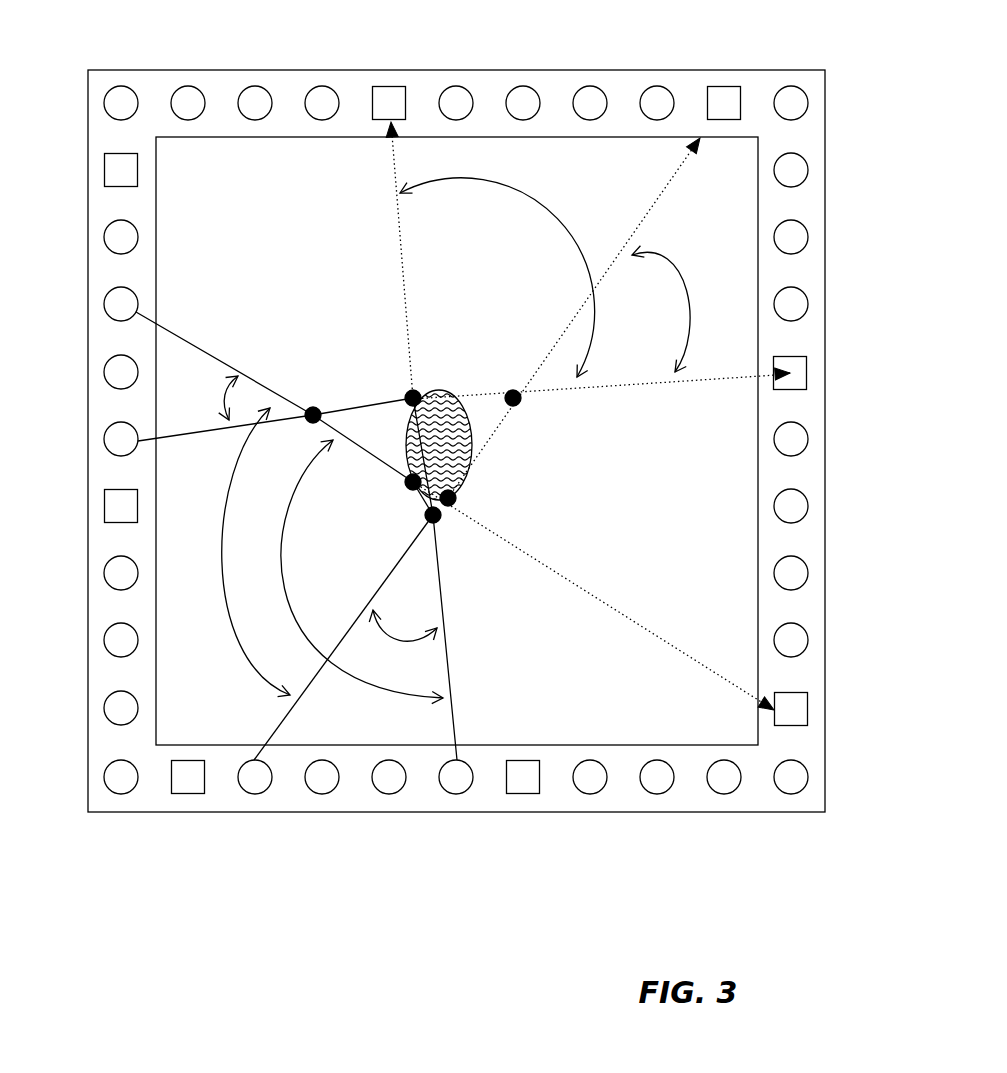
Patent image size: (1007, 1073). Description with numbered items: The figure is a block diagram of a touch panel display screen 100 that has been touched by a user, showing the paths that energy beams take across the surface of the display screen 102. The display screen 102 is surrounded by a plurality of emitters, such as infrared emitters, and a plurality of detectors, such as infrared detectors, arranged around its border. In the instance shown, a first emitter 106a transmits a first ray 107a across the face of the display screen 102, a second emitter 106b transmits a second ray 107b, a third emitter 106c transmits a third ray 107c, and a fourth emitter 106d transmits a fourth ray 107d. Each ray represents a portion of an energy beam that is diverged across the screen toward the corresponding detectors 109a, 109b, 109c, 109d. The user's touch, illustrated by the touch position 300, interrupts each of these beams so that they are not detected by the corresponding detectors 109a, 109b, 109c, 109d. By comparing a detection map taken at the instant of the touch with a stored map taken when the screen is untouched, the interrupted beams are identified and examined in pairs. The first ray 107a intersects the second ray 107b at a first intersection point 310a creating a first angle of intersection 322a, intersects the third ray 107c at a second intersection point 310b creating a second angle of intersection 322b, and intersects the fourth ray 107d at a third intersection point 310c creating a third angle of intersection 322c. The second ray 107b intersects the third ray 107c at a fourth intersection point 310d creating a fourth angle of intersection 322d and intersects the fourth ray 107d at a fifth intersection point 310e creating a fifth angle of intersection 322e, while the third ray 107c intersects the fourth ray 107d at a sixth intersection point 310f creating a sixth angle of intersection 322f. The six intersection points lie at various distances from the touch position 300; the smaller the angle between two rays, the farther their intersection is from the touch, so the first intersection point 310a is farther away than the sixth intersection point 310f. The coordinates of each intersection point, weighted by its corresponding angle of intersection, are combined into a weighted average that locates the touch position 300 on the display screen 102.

The touch panel display screen 100 is at (573, 815).
The display screen 102 is at (521, 722).
The first emitter 106a is at (110, 295).
The second emitter 106b is at (107, 430).
The third emitter 106c is at (262, 798).
The fourth emitter 106d is at (462, 798).
The first ray 107a is at (205, 345).
The second ray 107b is at (620, 393).
The third ray 107c is at (638, 203).
The fourth ray 107d is at (590, 592).
The first detector 109a is at (389, 85).
The second detector 109b is at (724, 86).
The third detector 109c is at (807, 378).
The fourth detector 109d is at (808, 715).
The touch position 300 is at (478, 452).
The first intersection point 310a is at (320, 410).
The second intersection point 310b is at (455, 505).
The third intersection point 310c is at (405, 484).
The fourth intersection point 310d is at (520, 402).
The fifth intersection point 310e is at (417, 392).
The sixth intersection point 310f is at (428, 508).
The first angle of intersection 322a is at (223, 393).
The second angle of intersection 322b is at (218, 540).
The third angle of intersection 322c is at (290, 610).
The fourth angle of intersection 322d is at (688, 302).
The fifth angle of intersection 322e is at (537, 221).
The sixth angle of intersection 322f is at (425, 630).